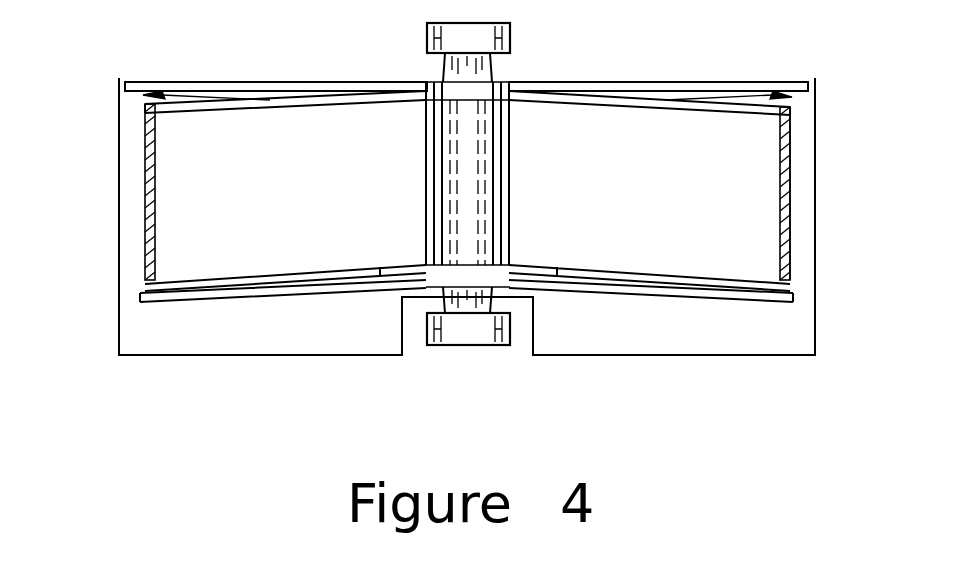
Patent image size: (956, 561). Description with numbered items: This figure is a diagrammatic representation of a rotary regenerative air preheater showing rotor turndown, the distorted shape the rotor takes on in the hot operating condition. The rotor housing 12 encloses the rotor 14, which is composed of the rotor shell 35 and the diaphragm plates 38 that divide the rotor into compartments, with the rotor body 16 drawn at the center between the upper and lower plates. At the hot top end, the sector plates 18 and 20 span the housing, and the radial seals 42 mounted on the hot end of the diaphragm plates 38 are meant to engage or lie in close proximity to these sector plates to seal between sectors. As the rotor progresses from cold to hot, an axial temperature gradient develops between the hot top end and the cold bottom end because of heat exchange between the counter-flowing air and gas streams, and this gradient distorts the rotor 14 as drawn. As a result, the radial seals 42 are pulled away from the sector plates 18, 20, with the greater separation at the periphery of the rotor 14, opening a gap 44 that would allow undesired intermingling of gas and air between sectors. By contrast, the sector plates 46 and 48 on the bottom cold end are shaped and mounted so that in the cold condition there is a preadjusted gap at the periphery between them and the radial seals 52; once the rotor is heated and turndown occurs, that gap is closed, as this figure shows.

The rotor housing 12 is at (118, 220).
The rotor 14 is at (760, 250).
The central shaft body 16 is at (510, 33).
The sector plate 18 is at (358, 80).
The sector plate 20 is at (577, 80).
The rotor shell 35 is at (790, 173).
The diaphragm plates 38 is at (172, 168).
The radial seals 42 is at (253, 93).
The gap 44 is at (141, 82).
The sector plate 46 is at (200, 293).
The sector plate 48 is at (737, 290).
The radial seals 52 is at (280, 277).